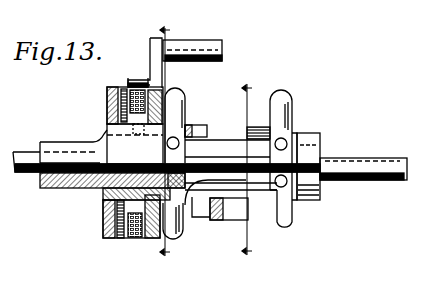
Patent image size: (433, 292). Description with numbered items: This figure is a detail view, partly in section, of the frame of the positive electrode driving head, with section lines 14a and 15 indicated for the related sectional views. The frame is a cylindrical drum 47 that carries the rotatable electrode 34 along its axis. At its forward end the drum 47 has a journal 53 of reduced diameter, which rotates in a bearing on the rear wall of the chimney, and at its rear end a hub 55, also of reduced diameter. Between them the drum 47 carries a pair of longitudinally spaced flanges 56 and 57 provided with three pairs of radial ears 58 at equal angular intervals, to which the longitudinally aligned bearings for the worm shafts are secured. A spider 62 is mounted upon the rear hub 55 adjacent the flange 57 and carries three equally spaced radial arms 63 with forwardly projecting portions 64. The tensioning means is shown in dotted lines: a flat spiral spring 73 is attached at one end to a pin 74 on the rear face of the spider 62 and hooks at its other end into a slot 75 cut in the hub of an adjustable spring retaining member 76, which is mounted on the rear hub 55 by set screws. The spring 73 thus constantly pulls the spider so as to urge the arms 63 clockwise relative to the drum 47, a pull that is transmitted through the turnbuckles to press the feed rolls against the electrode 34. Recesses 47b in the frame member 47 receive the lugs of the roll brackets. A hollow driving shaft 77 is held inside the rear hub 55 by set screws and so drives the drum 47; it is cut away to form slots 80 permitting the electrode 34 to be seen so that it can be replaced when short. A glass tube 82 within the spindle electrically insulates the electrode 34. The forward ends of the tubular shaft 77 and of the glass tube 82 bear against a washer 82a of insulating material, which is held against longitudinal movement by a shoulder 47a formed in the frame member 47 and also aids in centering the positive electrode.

The section line 14a is at (248, 168).
The section line 15 is at (168, 143).
The electrode 34 is at (30, 149).
The drum 47 is at (186, 234).
The shoulder 47a is at (193, 212).
The recesses 47b is at (237, 137).
The forward journal 53 is at (313, 133).
The rear hub 55 is at (110, 141).
The flange 56 is at (296, 133).
The flange 57 is at (190, 130).
The radial ears 58 is at (182, 97).
The spider 62 is at (148, 232).
The radial arms 63 is at (151, 42).
The forwardly projecting portions 64 is at (198, 46).
The flat spiral spring 73 is at (136, 241).
The pin 74 is at (130, 84).
The slot 75 is at (143, 113).
The spring retaining member 76 is at (107, 97).
The hollow driving shaft 77 is at (64, 190).
The slots 80 is at (100, 141).
The glass tube 82 is at (40, 178).
The washer 82a is at (213, 208).